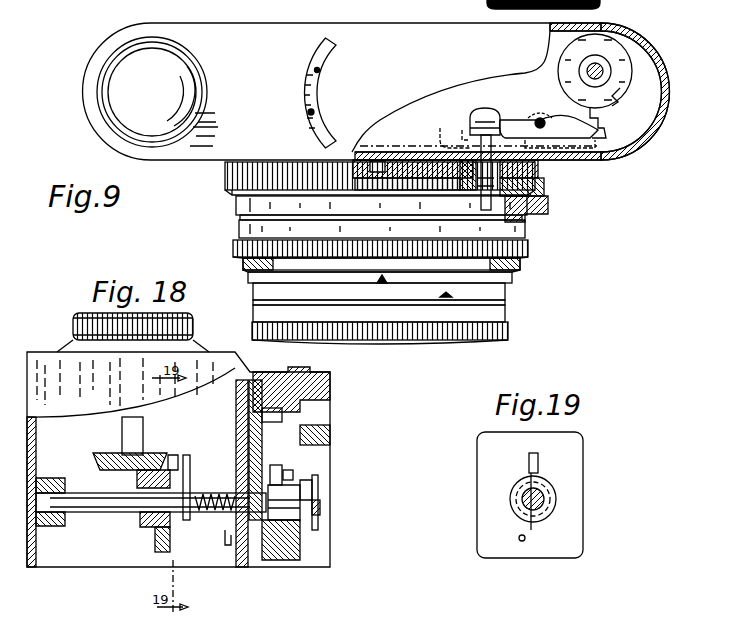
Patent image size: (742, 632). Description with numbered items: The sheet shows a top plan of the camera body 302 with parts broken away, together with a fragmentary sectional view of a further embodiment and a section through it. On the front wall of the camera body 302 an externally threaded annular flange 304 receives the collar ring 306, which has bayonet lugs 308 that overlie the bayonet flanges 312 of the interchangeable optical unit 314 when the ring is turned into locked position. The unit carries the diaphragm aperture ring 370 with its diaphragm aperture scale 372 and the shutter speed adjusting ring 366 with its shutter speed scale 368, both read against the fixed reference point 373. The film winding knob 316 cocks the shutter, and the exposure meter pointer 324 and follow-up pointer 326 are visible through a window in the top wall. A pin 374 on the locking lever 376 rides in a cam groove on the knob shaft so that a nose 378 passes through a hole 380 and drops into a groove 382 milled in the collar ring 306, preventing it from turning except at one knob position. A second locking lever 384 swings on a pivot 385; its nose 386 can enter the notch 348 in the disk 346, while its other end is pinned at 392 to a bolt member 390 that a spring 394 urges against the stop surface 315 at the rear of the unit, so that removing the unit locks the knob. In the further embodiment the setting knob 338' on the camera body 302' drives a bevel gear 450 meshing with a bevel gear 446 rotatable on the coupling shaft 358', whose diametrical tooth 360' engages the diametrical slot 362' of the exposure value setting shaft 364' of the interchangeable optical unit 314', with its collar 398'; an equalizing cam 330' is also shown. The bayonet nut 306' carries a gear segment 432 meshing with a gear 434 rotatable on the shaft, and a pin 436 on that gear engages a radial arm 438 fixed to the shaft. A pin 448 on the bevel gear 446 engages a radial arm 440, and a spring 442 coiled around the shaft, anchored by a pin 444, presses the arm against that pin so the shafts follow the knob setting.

In FIG. 9, the camera body 302 is at (355, 91).
In FIG. 9, the annular flange 304 is at (544, 185).
In FIG. 9, the collar ring 306 is at (356, 178).
In FIG. 9, the bayonet lugs 308 is at (505, 215).
In FIG. 9, the bayonet flanges 312 is at (548, 200).
In FIG. 9, the interchangeable optical unit 314 is at (342, 215).
In FIG. 9, the stop surface 315 is at (470, 195).
In FIG. 9, the film winding knob 316 is at (192, 72).
In FIG. 9, the exposure meter pointer 324 is at (317, 70).
In FIG. 9, the follow-up pointer 326 is at (310, 118).
In FIG. 9, the second collar 346 is at (608, 48).
In FIG. 9, the notch 348 is at (622, 94).
In FIG. 9, the shutter speed adjusting ring 366 is at (495, 332).
In FIG. 9, the shutter speed scale 368 is at (470, 314).
In FIG. 9, the diaphragm aperture ring 370 is at (492, 292).
In FIG. 9, the diaphragm aperture scale 372 is at (447, 299).
In FIG. 9, the reference point 373 is at (382, 302).
In FIG. 9, the pin 374 is at (615, 158).
In FIG. 9, the locking lever 376 is at (440, 146).
In FIG. 9, the nose 378 is at (383, 150).
In FIG. 9, the hole 380 is at (372, 158).
In FIG. 9, the groove 382 is at (377, 175).
In FIG. 9, the second locking lever 384 is at (518, 118).
In FIG. 9, the pivot 385 is at (538, 118).
In FIG. 9, the nose 386 is at (605, 125).
In FIG. 9, the bolt member 390 is at (480, 112).
In FIG. 9, the pin 392 is at (487, 108).
In FIG. 9, the spring 394 is at (538, 173).
In FIG. 18, the camera body 302' is at (178, 459).
In FIG. 19, the camera body 302' is at (511, 495).
In FIG. 18, the bayonet nut 306' is at (309, 389).
In FIG. 18, the interchangeable optical unit 314' is at (344, 430).
In FIG. 18, the equalizing cam 330' is at (105, 436).
In FIG. 18, the setting knob 338' is at (116, 332).
In FIG. 18, the coupling shaft 358' is at (151, 513).
In FIG. 19, the coupling shaft 358' is at (566, 499).
In FIG. 18, the diametrical tooth 360' is at (321, 507).
In FIG. 18, the diametrical slot 362' is at (343, 524).
In FIG. 18, the exposure value setting shaft 364' is at (348, 502).
In FIG. 18, the collar 398' is at (360, 484).
In FIG. 18, the gear segment 432 is at (245, 413).
In FIG. 18, the gear 434 is at (262, 540).
In FIG. 18, the pin 436 is at (282, 470).
In FIG. 18, the radial arm 438 is at (293, 475).
In FIG. 18, the radial arm 440 is at (190, 466).
In FIG. 19, the radial arm 440 is at (538, 460).
In FIG. 18, the spring 442 is at (188, 514).
In FIG. 19, the spring 442 is at (530, 532).
In FIG. 18, the pin 444 is at (226, 540).
In FIG. 19, the pin 444 is at (519, 540).
In FIG. 18, the bevel gear 446 is at (163, 535).
In FIG. 18, the pin 448 is at (173, 455).
In FIG. 19, the pin 448 is at (529, 460).
In FIG. 18, the bevel gear 450 is at (127, 462).